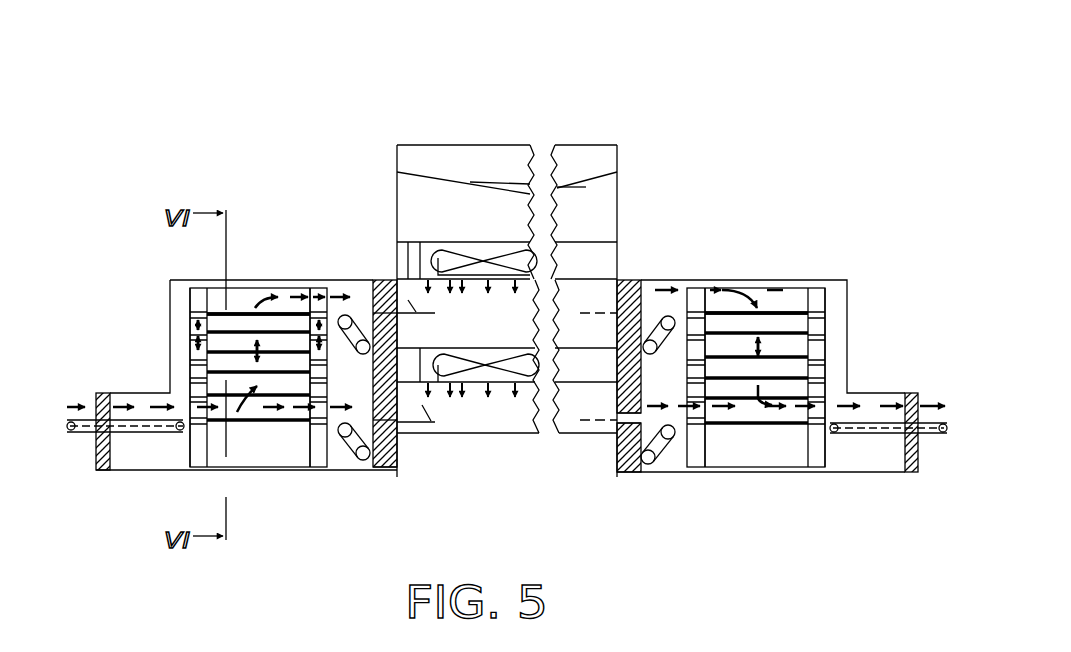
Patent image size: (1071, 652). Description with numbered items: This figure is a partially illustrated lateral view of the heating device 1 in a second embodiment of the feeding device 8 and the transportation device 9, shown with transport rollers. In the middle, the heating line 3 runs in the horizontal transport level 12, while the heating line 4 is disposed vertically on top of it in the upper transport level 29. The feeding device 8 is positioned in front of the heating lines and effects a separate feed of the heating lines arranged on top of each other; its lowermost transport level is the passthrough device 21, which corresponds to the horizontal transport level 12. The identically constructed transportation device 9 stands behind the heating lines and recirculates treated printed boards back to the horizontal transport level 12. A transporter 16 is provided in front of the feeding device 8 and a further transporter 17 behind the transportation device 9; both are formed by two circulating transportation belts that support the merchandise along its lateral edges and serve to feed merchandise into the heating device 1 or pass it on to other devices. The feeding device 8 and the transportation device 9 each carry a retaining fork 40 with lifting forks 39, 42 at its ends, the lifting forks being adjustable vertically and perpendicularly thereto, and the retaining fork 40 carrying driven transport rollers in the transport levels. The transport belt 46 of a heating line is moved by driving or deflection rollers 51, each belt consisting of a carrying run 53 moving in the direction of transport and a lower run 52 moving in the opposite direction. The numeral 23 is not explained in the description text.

The heating device 1 is at (558, 78).
The heating line 3 is at (590, 403).
The heating line 4 is at (597, 258).
The feeding device 8 is at (271, 237).
The transportation device 9 is at (768, 234).
The horizontal transport level 12 is at (430, 410).
The transporter 16 is at (121, 382).
The transporter 17 is at (875, 382).
The passthrough device 21 is at (262, 413).
The conveyor stack 23 is at (237, 290).
The upper transport level 29 is at (410, 298).
The lifting fork 39 is at (195, 288).
The retaining fork 40 is at (263, 290).
The lifting fork 42 is at (318, 290).
The transport belt 46 is at (365, 300).
The driving or deflection rollers 51 is at (650, 464).
The lower run 52 is at (383, 468).
The carrying run 53 is at (408, 424).